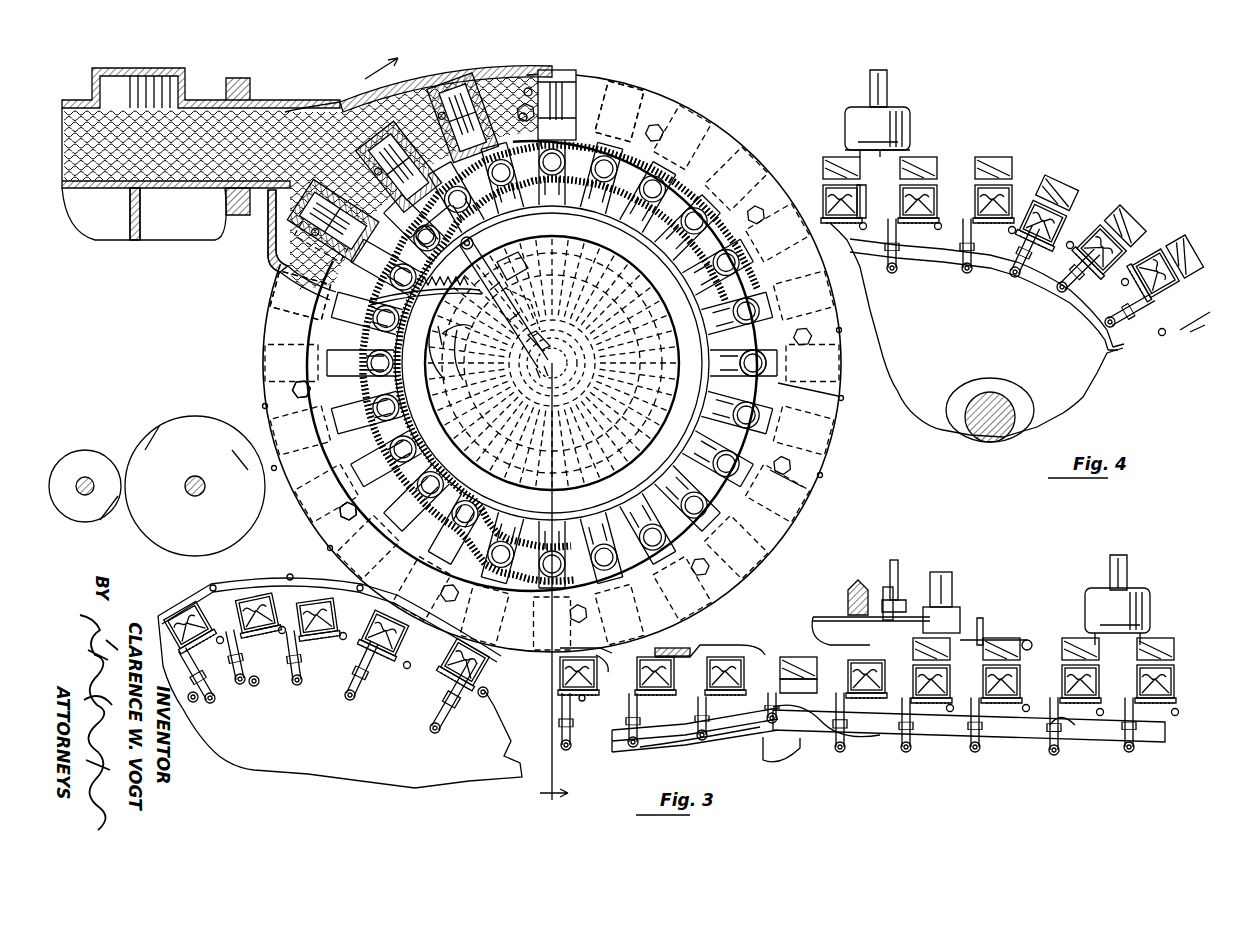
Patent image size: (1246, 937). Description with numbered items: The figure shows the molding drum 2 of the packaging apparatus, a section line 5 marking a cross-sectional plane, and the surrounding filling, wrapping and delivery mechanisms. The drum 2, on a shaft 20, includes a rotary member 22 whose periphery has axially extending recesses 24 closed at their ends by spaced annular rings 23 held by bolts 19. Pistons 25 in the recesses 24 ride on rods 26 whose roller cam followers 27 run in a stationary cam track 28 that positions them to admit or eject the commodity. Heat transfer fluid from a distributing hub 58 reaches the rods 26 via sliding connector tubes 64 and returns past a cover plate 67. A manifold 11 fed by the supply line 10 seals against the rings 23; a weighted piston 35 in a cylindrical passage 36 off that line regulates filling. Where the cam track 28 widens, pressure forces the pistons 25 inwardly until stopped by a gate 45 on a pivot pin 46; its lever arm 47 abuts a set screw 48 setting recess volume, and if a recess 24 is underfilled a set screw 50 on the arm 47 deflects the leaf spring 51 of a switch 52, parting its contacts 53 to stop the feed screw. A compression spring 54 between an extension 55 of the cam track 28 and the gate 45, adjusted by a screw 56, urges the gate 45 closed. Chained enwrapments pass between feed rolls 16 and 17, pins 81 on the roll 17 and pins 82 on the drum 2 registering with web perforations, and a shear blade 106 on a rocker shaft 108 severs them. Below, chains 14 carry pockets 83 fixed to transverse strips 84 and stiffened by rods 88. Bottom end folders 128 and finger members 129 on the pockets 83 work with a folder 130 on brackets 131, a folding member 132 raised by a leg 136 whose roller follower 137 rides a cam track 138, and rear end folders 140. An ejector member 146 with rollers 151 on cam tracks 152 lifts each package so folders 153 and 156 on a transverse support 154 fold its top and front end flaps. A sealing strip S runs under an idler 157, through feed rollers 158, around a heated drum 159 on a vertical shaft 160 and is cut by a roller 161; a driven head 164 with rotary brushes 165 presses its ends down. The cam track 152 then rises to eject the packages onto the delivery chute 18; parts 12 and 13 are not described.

In FIG. 3, the drum 2 is at (700, 140).
In FIG. 3, the section line 5 is at (455, 438).
In FIG. 3, the supply line 10 is at (160, 230).
In FIG. 3, the manifold or header 11 is at (335, 100).
In FIG. 4, the shaft 12 is at (985, 395).
In FIG. 3, the support plate 13 is at (385, 770).
In FIG. 4, the support plate 13 is at (1077, 366).
In FIG. 3, the chains 14 is at (195, 605).
In FIG. 3, the feed roll 16 is at (80, 455).
In FIG. 3, the feed roll 17 is at (172, 416).
In FIG. 4, the delivery chute 18 is at (1200, 300).
In FIG. 3, the bolts 19 is at (370, 148).
In FIG. 3, the shaft 20 is at (552, 363).
In FIG. 3, the rotary member 22 is at (262, 328).
In FIG. 3, the annular rings 23 is at (672, 108).
In FIG. 3, the recesses or pockets 24 is at (410, 88).
In FIG. 3, the pistons or plungers 25 is at (243, 310).
In FIG. 3, the rods 26 is at (805, 488).
In FIG. 3, the roller cam followers 27 is at (820, 404).
In FIG. 3, the cam track 28 is at (452, 560).
In FIG. 3, the piston 35 is at (183, 76).
In FIG. 3, the cylindrical passage 36 is at (176, 148).
In FIG. 3, the gate 45 is at (420, 236).
In FIG. 3, the pivot pin 46 is at (422, 221).
In FIG. 3, the lever arm 47 is at (482, 240).
In FIG. 3, the set screw 48 is at (530, 262).
In FIG. 3, the set screw 50 is at (518, 272).
In FIG. 3, the leaf spring member 51 is at (478, 342).
In FIG. 3, the switch 52 is at (538, 340).
In FIG. 3, the contacts 53 is at (551, 301).
In FIG. 3, the compression spring 54 is at (395, 290).
In FIG. 3, the extension 55 is at (528, 385).
In FIG. 3, the adjusting screw 56 is at (448, 362).
In FIG. 3, the distributing hub 58 is at (590, 410).
In FIG. 3, the connector tubes 64 is at (735, 352).
In FIG. 3, the cover plate 67 is at (722, 300).
In FIG. 3, the projections or pins 81 is at (155, 420).
In FIG. 3, the pins 82 is at (838, 462).
In FIG. 3, the pockets or receptacles 83 is at (370, 690).
In FIG. 4, the pockets or receptacles 83 is at (1072, 210).
In FIG. 3, the transverse supporting strips 84 is at (260, 685).
In FIG. 3, the stiffening and reinforcing rods 88 is at (232, 690).
In FIG. 3, the shear blade 106 is at (355, 130).
In FIG. 3, the rocker shaft 108 is at (325, 150).
In FIG. 3, the bottom end folders 128 is at (564, 727).
In FIG. 3, the finger members 129 is at (580, 700).
In FIG. 3, the folding member 130 is at (690, 652).
In FIG. 3, the transverse brackets 131 is at (712, 650).
In FIG. 3, the folding member 132 is at (775, 655).
In FIG. 3, the leg 136 is at (558, 722).
In FIG. 3, the roller follower 137 is at (568, 746).
In FIG. 3, the cam track 138 is at (670, 745).
In FIG. 3, the rear end folders 140 is at (768, 660).
In FIG. 3, the ejector member 146 is at (855, 740).
In FIG. 3, the rollers 151 is at (592, 748).
In FIG. 3, the cam tracks 152 is at (783, 765).
In FIG. 4, the cam tracks 152 is at (928, 262).
In FIG. 3, the top end folder members 153 is at (815, 635).
In FIG. 3, the transverse support member 154 is at (852, 590).
In FIG. 3, the folder members 156 is at (883, 605).
In FIG. 3, the guide roll or idler 157 is at (1030, 640).
In FIG. 3, the driven feed rollers 158 is at (975, 620).
In FIG. 3, the drum 159 is at (956, 610).
In FIG. 3, the driven vertical shaft 160 is at (940, 572).
In FIG. 3, the roller 161 is at (895, 560).
In FIG. 3, the driven head or member 164 is at (1128, 575).
In FIG. 4, the driven head or member 164 is at (895, 110).
In FIG. 3, the rotary brush members 165 is at (1092, 636).
In FIG. 4, the rotary brush members 165 is at (848, 155).
In FIG. 3, the sealing strip S is at (1045, 640).
In FIG. 4, the sealing strip S is at (1010, 158).